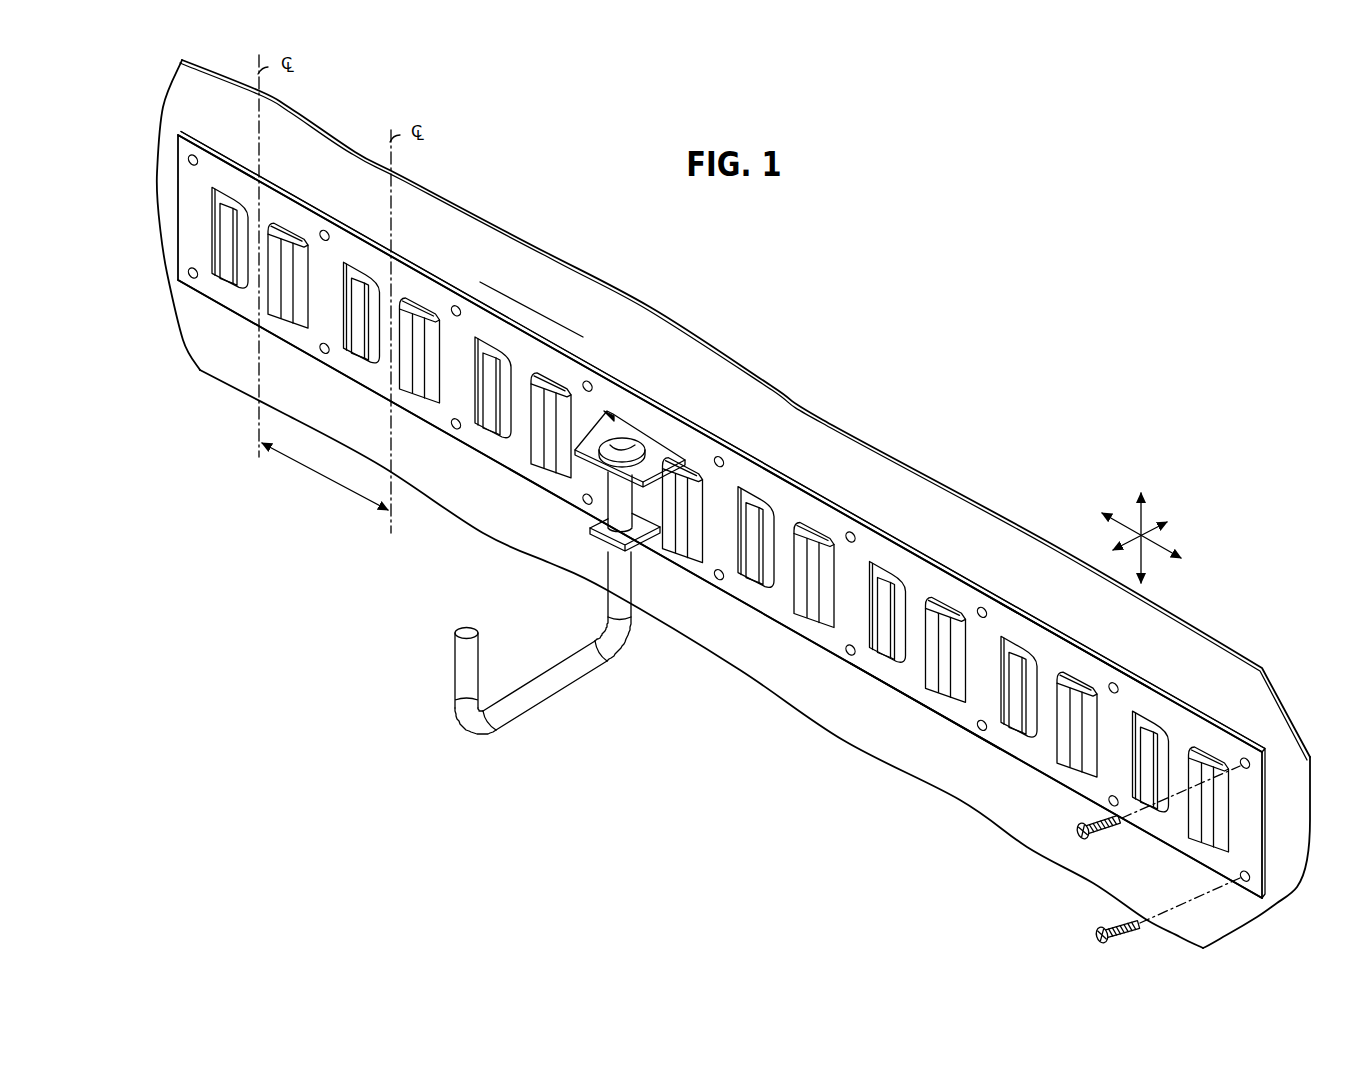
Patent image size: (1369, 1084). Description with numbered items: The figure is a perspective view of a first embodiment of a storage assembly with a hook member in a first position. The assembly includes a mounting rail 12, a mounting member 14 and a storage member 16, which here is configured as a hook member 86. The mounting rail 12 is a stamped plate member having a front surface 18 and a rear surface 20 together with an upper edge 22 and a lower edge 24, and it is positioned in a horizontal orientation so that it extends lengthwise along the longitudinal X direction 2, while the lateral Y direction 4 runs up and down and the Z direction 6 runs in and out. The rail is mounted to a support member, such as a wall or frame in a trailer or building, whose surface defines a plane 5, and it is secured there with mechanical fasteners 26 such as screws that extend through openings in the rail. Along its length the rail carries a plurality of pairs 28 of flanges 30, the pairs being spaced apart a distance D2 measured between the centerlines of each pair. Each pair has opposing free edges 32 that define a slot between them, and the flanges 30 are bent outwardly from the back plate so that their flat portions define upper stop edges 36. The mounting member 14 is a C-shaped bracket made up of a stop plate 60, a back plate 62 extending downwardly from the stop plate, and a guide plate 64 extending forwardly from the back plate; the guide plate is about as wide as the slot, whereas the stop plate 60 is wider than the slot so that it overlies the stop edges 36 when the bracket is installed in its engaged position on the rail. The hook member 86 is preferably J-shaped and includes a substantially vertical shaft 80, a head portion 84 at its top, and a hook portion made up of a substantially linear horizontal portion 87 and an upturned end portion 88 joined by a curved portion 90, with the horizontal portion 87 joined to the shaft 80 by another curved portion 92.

The longitudinal X direction 2 is at (1163, 553).
The Y direction 4 is at (1145, 510).
The support member surface plane 5 is at (889, 492).
The Z direction 6 is at (1160, 530).
The mounting rail 12 is at (721, 515).
The mounting member 14 is at (543, 574).
The storage member 16 is at (515, 701).
The front surface 18 is at (913, 680).
The rear surface 20 is at (1070, 637).
The upper edge 22 is at (935, 562).
The lower edge 24 is at (760, 613).
The mechanical fasteners 26 is at (1113, 833).
The pairs of flanges 28 is at (540, 294).
The flanges 30 is at (748, 537).
The opposing free edges 32 is at (527, 443).
The upper stop edges 36 is at (690, 499).
The stop plate 60 is at (668, 455).
The back plate 62 is at (657, 490).
The guide plate 64 is at (590, 520).
The shaft 80 is at (628, 580).
The head portion 84 is at (621, 441).
The hook member 86 is at (515, 689).
The horizontal portion 87 is at (557, 693).
The end portion 88 is at (475, 667).
The curved portion 90 is at (480, 723).
The curved portion 92 is at (627, 640).
The spacing distance D2 is at (318, 473).